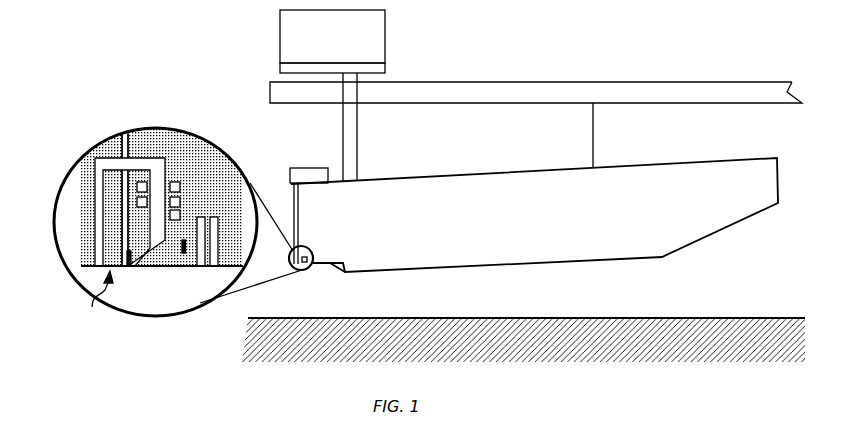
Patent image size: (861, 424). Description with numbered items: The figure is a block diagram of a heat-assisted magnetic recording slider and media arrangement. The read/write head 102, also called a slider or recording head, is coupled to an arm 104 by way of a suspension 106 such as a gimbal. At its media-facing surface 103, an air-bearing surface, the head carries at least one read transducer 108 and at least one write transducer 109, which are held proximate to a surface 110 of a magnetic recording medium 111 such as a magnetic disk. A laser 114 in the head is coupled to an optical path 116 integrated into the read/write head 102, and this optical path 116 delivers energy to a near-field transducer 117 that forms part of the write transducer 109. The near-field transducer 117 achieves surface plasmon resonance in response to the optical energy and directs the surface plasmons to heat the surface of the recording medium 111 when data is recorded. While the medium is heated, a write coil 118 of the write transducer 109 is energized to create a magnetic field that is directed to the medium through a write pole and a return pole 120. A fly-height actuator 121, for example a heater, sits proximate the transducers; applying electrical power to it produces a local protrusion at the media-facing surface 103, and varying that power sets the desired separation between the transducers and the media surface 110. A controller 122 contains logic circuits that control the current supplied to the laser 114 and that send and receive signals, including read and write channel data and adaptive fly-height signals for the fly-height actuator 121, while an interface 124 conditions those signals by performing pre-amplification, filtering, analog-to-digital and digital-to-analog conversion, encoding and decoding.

The read/write head 102 is at (715, 158).
The media-facing surface 103 is at (342, 270).
The arm 104 is at (706, 82).
The suspension 106 is at (593, 153).
The read transducer 108 is at (197, 255).
The write transducer 109 is at (94, 300).
The surface 110 is at (797, 318).
The magnetic recording medium 111 is at (668, 362).
The laser 114 is at (306, 167).
The optical path 116 is at (122, 150).
The near-field transducer 117 is at (125, 268).
The write coil 118 is at (176, 182).
The return pole 120 is at (95, 257).
The fly-height actuator 121 is at (184, 240).
The controller 122 is at (385, 39).
The interface 124 is at (385, 70).